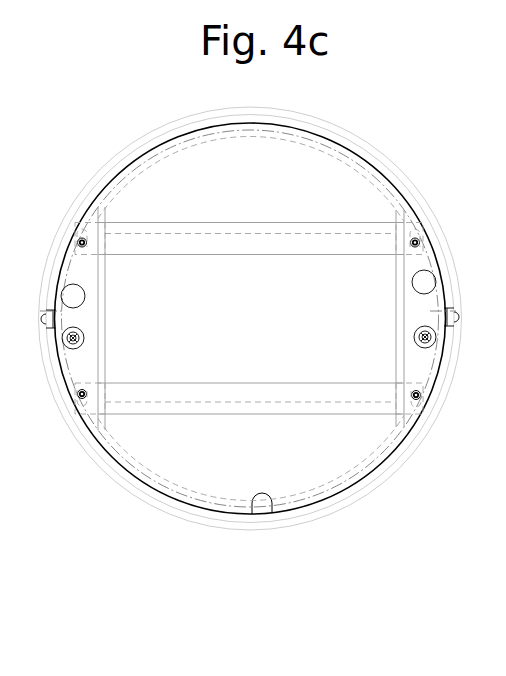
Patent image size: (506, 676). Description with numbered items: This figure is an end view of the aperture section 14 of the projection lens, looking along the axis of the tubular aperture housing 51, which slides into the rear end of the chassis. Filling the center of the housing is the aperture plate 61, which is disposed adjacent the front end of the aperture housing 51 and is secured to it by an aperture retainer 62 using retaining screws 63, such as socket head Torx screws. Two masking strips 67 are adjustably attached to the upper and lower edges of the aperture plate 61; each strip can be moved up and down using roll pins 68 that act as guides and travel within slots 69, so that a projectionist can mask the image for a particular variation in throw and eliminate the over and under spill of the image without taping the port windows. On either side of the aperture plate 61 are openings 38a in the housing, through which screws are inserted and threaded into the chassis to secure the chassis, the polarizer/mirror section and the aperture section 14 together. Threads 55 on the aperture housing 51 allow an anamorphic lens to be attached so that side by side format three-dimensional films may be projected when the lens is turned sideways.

The aperture section 14 is at (384, 552).
The aperture housing 51 is at (217, 527).
The threads 55 is at (272, 497).
The aperture plate 61 is at (397, 368).
The aperture retainer 62 is at (404, 284).
The retaining screws 63 is at (85, 342).
The masking strips 67 is at (197, 256).
The roll pins 68 is at (421, 394).
The slots 69 is at (422, 402).
The openings 38a is at (85, 296).